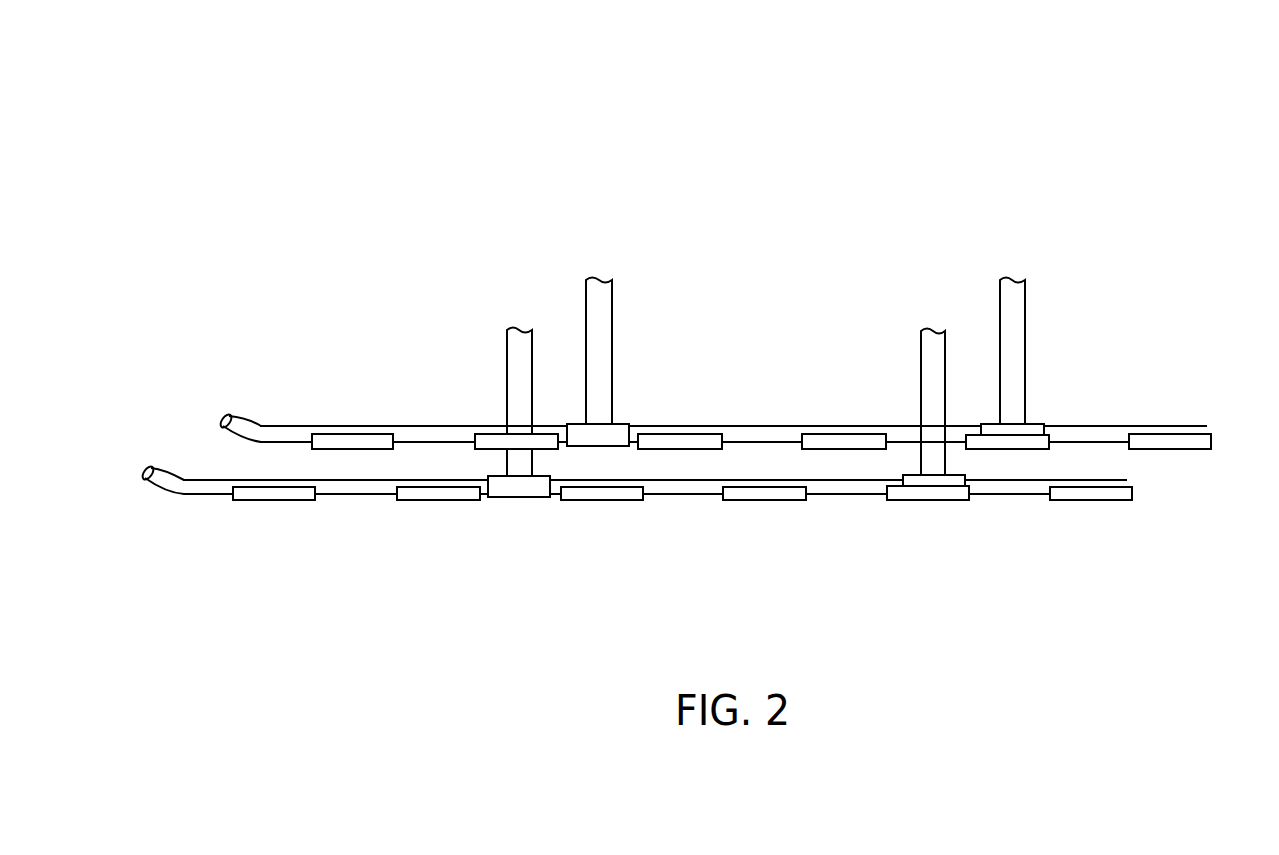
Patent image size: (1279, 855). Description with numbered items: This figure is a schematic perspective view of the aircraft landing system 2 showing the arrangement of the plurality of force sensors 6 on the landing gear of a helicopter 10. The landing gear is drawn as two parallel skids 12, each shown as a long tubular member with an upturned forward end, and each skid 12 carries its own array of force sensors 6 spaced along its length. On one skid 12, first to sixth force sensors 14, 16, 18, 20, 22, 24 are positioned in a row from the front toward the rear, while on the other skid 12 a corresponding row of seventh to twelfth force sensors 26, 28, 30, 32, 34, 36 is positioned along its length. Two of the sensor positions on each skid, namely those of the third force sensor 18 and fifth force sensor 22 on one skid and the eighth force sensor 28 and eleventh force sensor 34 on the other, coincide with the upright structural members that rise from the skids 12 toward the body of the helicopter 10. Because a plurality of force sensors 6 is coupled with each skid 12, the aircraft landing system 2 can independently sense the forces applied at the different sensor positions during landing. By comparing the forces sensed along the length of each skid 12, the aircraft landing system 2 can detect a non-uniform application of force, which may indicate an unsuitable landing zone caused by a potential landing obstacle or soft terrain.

The aircraft landing system 2 is at (101, 127).
The force sensors 6 is at (1225, 415).
The helicopter 10 is at (515, 140).
The skids 12 is at (169, 407).
The first force sensor 14 is at (249, 538).
The second force sensor 16 is at (414, 538).
The third force sensor 18 is at (565, 459).
The fourth force sensor 20 is at (739, 538).
The fifth force sensor 22 is at (903, 460).
The sixth force sensor 24 is at (1066, 538).
The seventh force sensor 26 is at (349, 492).
The eighth force sensor 28 is at (536, 414).
The ninth force sensor 30 is at (679, 492).
The tenth force sensor 32 is at (844, 492).
The eleventh force sensor 34 is at (1007, 414).
The twelfth force sensor 36 is at (1192, 488).